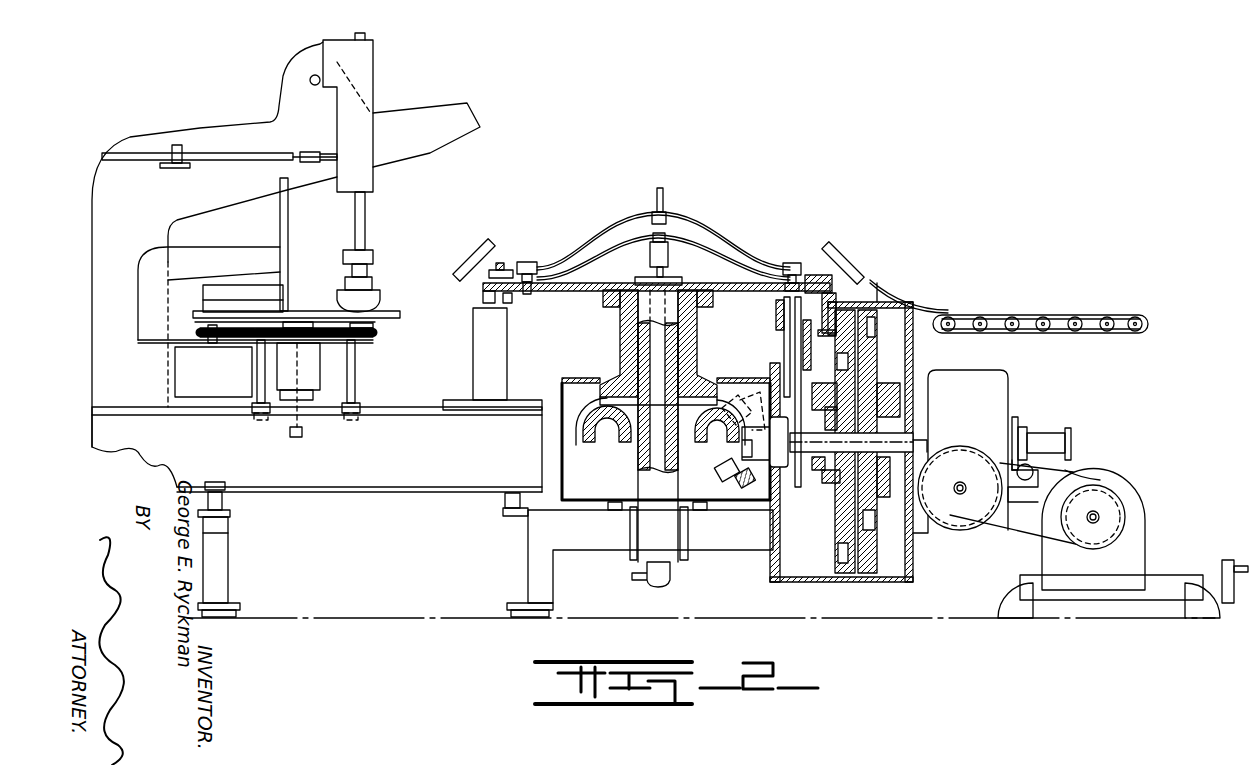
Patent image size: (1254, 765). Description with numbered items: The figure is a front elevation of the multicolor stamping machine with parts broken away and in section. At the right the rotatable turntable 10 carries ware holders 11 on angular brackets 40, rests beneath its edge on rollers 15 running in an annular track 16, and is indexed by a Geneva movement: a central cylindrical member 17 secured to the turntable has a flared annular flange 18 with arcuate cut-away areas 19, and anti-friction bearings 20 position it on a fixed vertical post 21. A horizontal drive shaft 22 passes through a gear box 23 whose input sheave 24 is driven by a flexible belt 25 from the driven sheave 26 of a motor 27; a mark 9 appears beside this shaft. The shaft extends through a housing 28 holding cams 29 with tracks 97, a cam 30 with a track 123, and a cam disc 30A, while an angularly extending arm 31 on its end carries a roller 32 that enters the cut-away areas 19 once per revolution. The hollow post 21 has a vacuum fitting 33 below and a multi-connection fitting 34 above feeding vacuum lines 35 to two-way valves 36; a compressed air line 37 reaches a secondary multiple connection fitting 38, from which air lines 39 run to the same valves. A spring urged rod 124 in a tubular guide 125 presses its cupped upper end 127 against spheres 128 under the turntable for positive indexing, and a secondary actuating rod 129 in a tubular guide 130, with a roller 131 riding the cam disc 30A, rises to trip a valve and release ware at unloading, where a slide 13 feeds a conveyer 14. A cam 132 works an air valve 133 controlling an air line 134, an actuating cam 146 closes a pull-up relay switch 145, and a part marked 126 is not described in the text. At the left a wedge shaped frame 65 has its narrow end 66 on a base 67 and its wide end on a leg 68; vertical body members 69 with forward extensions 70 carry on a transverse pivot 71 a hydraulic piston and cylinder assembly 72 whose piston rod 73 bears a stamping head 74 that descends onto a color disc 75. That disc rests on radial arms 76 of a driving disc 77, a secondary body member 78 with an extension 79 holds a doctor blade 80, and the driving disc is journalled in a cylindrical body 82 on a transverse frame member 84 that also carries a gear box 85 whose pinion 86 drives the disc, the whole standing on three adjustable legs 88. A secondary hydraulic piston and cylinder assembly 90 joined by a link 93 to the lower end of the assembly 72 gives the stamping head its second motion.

The section line 9 is at (839, 450).
The rotatable turntable 10 is at (547, 291).
The ware holders 11 is at (470, 253).
The slide 13 is at (888, 289).
The conveyer 14 is at (983, 316).
The rollers 15 is at (484, 303).
The annular track 16 is at (484, 296).
The cylindrical member 17 is at (698, 345).
The annular flange 18 is at (666, 441).
The arcuate cut-away areas 19 is at (607, 433).
The anti-friction bearings 20 is at (697, 380).
The fixed vertical post 21 is at (676, 510).
The drive shaft 22 is at (909, 453).
The gear box 23 is at (993, 393).
The input sheave 24 is at (953, 522).
The flexible belt 25 is at (1005, 535).
The driven sheave 26 is at (1113, 516).
The motor 27 is at (1135, 542).
The housing 28 is at (800, 585).
The cams 29 is at (836, 540).
The cam 30 is at (840, 505).
The cam disc 30A is at (815, 478).
The angularly extending arm 31 is at (735, 413).
The roller 32 is at (720, 468).
The fitting 33 is at (650, 580).
The multi-connection fitting 34 is at (650, 258).
The vacuum lines 35 is at (606, 250).
The two-way valves 36 is at (534, 265).
The compressed air line 37 is at (664, 198).
The secondary multiple connection fitting 38 is at (652, 214).
The air lines 39 is at (600, 245).
The angular brackets 40 is at (498, 270).
The wedge shaped frame 65 is at (414, 459).
The forward or narrow end 66 is at (523, 462).
The base 67 is at (548, 533).
The leg 68 is at (230, 556).
The body members 69 is at (126, 256).
The forward extensions 70 is at (447, 108).
The transverse pivot 71 is at (310, 80).
The hydraulic piston and cylinder assembly 72 is at (370, 75).
The piston rod 73 is at (366, 222).
The stamping head 74 is at (376, 298).
The color disc 75 is at (385, 310).
The radially extending arms 76 is at (380, 326).
The driving disc 77 is at (372, 333).
The secondary body member 78 is at (148, 306).
The forwardly projecting extension 79 is at (213, 250).
The doctor blade 80 is at (284, 297).
The cylindrical body 82 is at (315, 378).
The transversely extending frame member 84 is at (330, 350).
The gear box 85 is at (226, 378).
The pinion 86 is at (207, 332).
The vertically adjustable legs 88 is at (355, 382).
The secondary hydraulic piston and cylinder assembly 90 is at (236, 161).
The link 93 is at (322, 140).
The track 97 is at (875, 327).
The track 123 is at (818, 505).
The spring urged rod 124 is at (822, 303).
The tubular guide 125 is at (862, 346).
The bearing 126 is at (866, 382).
The cupped upper end 127 is at (806, 266).
The spheres 128 is at (506, 300).
The secondary actuating rod 129 is at (776, 310).
The tubular guide 130 is at (776, 348).
The roller 131 is at (776, 374).
The cam 132 is at (1028, 425).
The air valve 133 is at (1013, 500).
The air line 134 is at (1012, 458).
The pull-up relay switch 145 is at (1080, 475).
The actuating cam 146 is at (1072, 430).